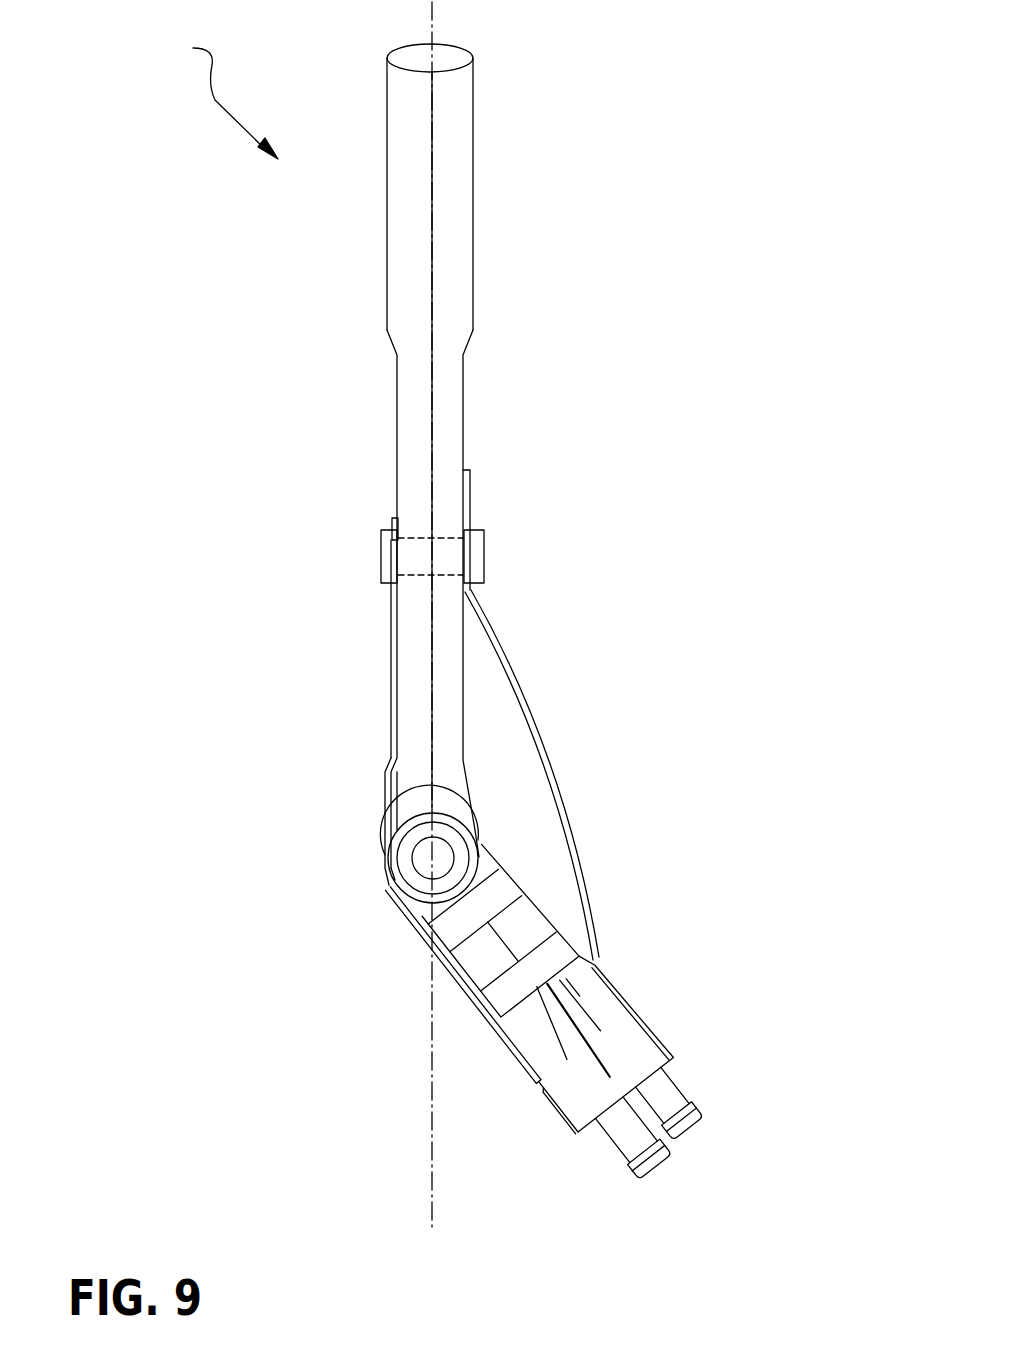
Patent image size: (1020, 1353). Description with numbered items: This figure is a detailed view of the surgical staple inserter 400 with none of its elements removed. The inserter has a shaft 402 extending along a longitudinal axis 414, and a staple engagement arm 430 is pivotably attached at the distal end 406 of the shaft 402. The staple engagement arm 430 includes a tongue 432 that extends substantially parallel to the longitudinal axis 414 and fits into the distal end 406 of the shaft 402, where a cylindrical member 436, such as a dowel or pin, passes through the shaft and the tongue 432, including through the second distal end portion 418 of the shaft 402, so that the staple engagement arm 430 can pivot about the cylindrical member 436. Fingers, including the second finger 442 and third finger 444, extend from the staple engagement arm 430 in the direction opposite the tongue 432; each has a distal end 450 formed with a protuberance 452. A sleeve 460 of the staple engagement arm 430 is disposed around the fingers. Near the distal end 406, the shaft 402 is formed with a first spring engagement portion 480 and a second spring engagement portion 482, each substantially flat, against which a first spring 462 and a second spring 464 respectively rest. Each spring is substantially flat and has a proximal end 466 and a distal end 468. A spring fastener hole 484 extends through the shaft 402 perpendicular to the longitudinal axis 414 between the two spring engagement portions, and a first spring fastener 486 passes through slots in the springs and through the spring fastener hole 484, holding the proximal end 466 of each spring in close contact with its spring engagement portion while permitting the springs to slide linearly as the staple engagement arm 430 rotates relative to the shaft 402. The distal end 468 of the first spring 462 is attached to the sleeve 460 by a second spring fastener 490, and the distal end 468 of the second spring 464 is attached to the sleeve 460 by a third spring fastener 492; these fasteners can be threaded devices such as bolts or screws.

The surgical staple inserter 400 is at (215, 96).
The shaft 402 is at (460, 262).
The longitudinal axis 414 is at (425, 173).
The first spring engagement portion 480 is at (395, 385).
The second spring engagement portion 482 is at (463, 383).
The spring fastener hole 484 is at (396, 520).
The proximal end 466 is at (470, 475).
The first spring fastener 486 is at (484, 556).
The second spring 464 is at (538, 718).
The distal end 406 is at (413, 770).
The first spring 462 is at (388, 808).
The second distal end portion 418 is at (447, 808).
The cylindrical member 436 is at (440, 840).
The staple engagement arm 430 is at (393, 910).
The tongue 432 is at (493, 863).
The distal end 468 is at (593, 960).
The third spring fastener 492 is at (613, 977).
The sleeve 460 is at (580, 1007).
The second spring fastener 490 is at (513, 1053).
The second finger 442 is at (600, 1137).
The third finger 444 is at (670, 1082).
The distal end 450 is at (667, 1110).
The protuberance 452 is at (683, 1135).